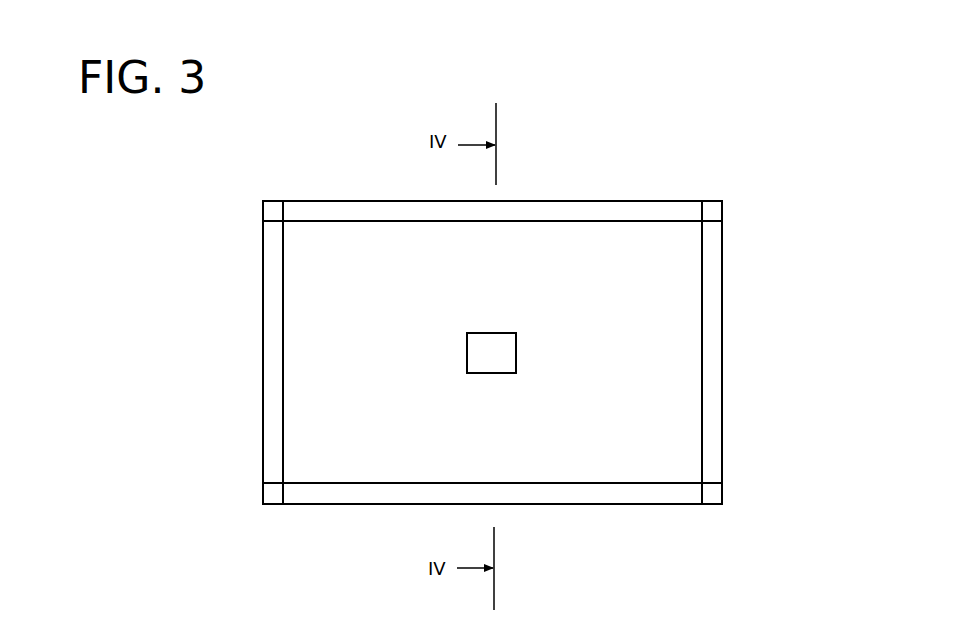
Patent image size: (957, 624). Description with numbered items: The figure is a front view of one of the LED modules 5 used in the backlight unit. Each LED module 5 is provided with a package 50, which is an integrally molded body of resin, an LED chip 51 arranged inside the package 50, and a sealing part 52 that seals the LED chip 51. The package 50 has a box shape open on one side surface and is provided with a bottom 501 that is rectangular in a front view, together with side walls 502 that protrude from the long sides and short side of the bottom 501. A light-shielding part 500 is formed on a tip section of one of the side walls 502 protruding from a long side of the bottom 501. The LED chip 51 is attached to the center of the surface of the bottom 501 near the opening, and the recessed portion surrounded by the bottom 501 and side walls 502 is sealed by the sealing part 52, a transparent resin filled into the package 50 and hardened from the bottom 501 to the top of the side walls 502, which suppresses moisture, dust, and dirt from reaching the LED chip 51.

The LED module 5 is at (295, 184).
The package 50 is at (717, 462).
The light-shielding part 500 is at (562, 215).
The bottom 501 is at (375, 433).
The side walls 502 is at (270, 280).
The LED chip 51 is at (473, 346).
The sealing part 52 is at (302, 443).